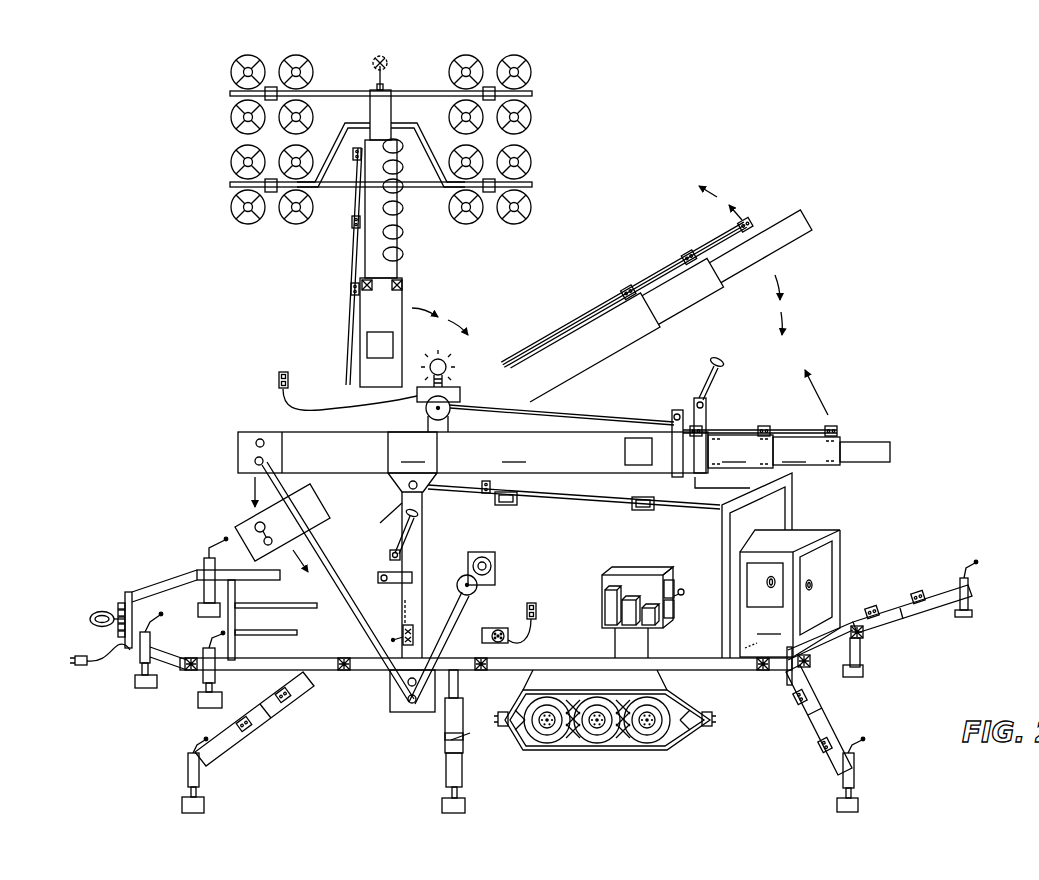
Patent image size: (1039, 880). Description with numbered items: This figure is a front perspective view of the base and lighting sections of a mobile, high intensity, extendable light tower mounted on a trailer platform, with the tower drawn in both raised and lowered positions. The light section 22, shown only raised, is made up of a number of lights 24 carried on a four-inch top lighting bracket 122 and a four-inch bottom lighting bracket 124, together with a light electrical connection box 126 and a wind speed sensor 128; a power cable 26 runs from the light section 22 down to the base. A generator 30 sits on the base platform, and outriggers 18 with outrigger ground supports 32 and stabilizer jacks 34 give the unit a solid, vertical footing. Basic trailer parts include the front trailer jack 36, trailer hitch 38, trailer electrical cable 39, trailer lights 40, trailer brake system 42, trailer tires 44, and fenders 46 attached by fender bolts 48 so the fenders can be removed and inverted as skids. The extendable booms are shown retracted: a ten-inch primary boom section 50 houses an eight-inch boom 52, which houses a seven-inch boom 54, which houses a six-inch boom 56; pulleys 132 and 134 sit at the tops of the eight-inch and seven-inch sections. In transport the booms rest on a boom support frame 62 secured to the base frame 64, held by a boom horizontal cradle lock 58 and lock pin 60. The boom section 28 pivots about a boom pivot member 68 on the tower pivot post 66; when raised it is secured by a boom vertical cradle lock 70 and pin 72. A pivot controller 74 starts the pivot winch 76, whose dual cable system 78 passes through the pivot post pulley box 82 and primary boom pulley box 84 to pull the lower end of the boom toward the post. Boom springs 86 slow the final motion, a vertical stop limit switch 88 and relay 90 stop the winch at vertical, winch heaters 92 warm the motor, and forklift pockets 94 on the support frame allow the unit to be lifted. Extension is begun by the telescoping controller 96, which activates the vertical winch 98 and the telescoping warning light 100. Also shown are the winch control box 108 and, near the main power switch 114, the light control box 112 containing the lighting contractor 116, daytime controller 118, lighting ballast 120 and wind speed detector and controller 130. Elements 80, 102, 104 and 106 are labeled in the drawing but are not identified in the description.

The outriggers 18 is at (250, 733).
The light section 22 is at (558, 80).
The lights 24 is at (522, 150).
The power cable 26 is at (402, 168).
The boom section 28 is at (616, 270).
The generator 30 is at (790, 593).
The outrigger ground supports 32 is at (858, 780).
The stabilizer jacks 34 is at (205, 558).
The front trailer jack 36 is at (137, 658).
The trailer hitch 38 is at (103, 612).
The trailer electrical cable 39 is at (80, 668).
The trailer lights 40 is at (186, 670).
The trailer brake system 42 is at (572, 690).
The trailer tires 44 is at (548, 745).
The fenders 46 is at (640, 750).
The fender bolts 48 is at (712, 718).
The primary boom section 50 is at (473, 452).
The 8-inch boom 52 is at (760, 447).
The 7-inch boom 54 is at (806, 445).
The six-inch boom 56 is at (866, 462).
The boom horizontal cradle lock 58 is at (706, 404).
The boom horizontal cradle lock pin 60 is at (714, 382).
The boom support frame 62 is at (794, 498).
The base frame 64 is at (722, 670).
The tower pivot post 66 is at (423, 566).
The boom pivot member 68 is at (412, 462).
The boom vertical cradle lock 70 is at (378, 577).
The boom vertical cradle lock pin 72 is at (396, 535).
The pivot controller 74 is at (531, 603).
The pivot winch 76 is at (514, 628).
The dual cable system 78 is at (357, 347).
The pulley 80 is at (496, 568).
The pivot post pulley box 82 is at (398, 712).
The primary boom pulley box 84 is at (258, 438).
The boom springs 86 is at (395, 522).
The vertical stop limit switch 88 is at (405, 612).
The vertical stop limit relay 90 is at (484, 490).
The winch heaters 92 is at (482, 552).
The forklift pockets 94 is at (505, 506).
The telescoping controller 96 is at (283, 372).
The vertical winch 98 is at (426, 410).
The telescoping warning light 100 is at (452, 364).
The clamp 102 is at (352, 286).
The control box 104 is at (394, 345).
The clamp 106 is at (403, 285).
The winch control box 108 is at (417, 395).
The light control box 112 is at (612, 590).
The main power switch 114 is at (681, 600).
The lighting contractor 116 is at (650, 625).
The daytime controller 118 is at (675, 582).
The lighting ballast 120 is at (642, 571).
The top lighting bracket 122 is at (370, 91).
The bottom lighting bracket 124 is at (360, 123).
The light electrical connection box 126 is at (274, 193).
The wind speed sensor 128 is at (388, 60).
The wind speed detector and controller 130 is at (608, 623).
The pulley at the top of the 8-inch boom section 132 is at (355, 228).
The pulley at the top of the 7-inch boom section 134 is at (355, 160).